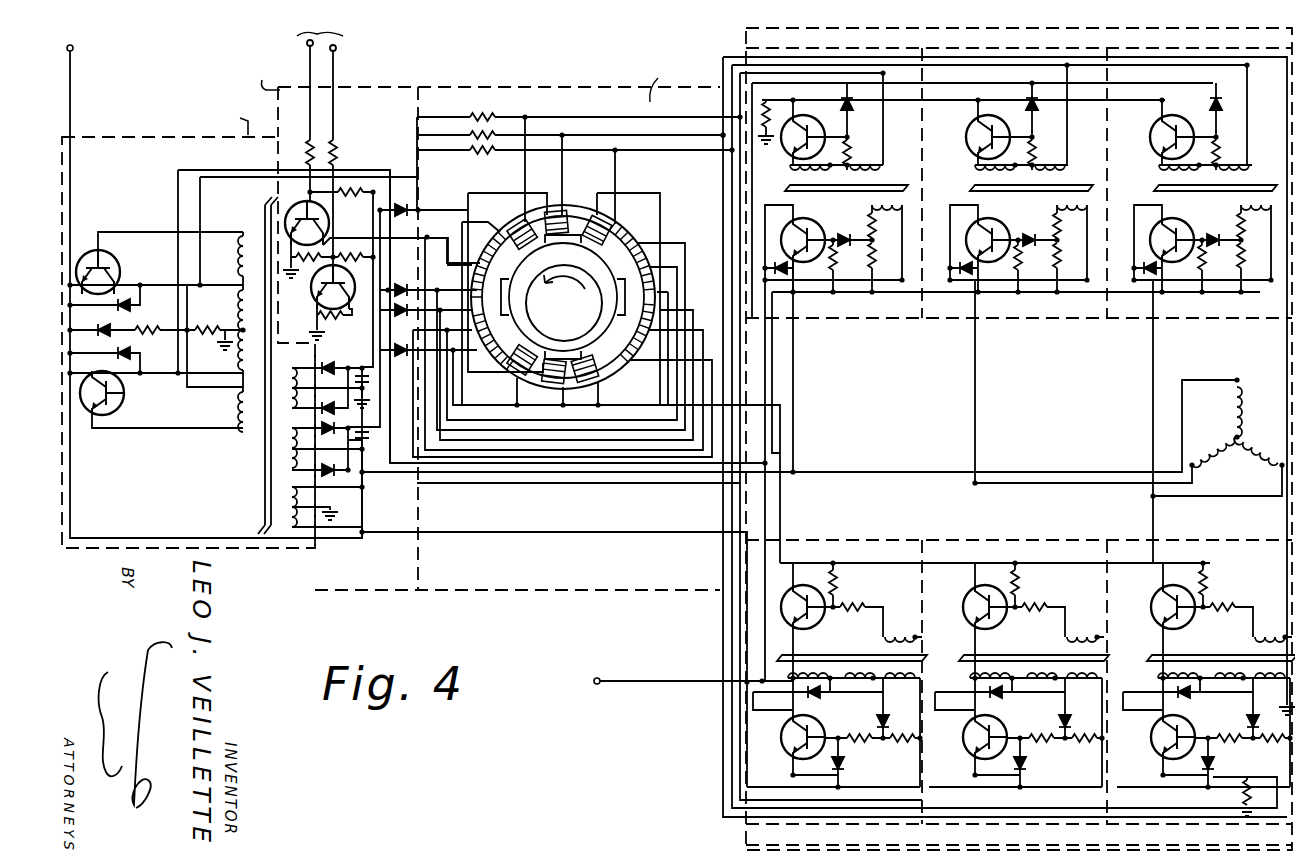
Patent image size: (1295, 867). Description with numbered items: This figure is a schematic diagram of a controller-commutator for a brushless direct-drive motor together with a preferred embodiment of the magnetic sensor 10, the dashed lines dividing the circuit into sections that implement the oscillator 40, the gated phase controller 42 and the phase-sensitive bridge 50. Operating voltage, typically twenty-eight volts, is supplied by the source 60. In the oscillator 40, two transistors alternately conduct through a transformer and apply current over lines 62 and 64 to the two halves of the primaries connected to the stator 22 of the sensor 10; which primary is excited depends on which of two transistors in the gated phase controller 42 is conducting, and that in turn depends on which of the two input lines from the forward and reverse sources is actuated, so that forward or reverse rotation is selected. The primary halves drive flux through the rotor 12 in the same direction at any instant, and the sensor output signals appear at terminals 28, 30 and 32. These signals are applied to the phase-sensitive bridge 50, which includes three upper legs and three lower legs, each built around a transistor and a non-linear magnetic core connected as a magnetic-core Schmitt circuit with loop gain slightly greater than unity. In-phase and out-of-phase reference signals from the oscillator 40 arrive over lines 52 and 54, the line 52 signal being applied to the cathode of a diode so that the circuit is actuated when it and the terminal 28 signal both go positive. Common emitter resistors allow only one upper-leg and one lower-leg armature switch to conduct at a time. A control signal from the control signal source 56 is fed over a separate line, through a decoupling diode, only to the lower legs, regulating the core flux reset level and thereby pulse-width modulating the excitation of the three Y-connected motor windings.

The magnetic sensor 10 is at (454, 82).
The rotor 12 is at (600, 303).
The stator 22 is at (620, 248).
The terminal 28 is at (740, 117).
The terminal 30 is at (722, 137).
The terminal 32 is at (732, 150).
The oscillator 40 is at (88, 136).
The gated phase controller 42 is at (382, 88).
The phase-sensitive bridge 50 is at (745, 36).
The line 52 is at (492, 492).
The line 54 is at (495, 533).
The control signal source 56 is at (606, 690).
The source 60 is at (73, 48).
The line 62 is at (170, 178).
The line 64 is at (200, 198).